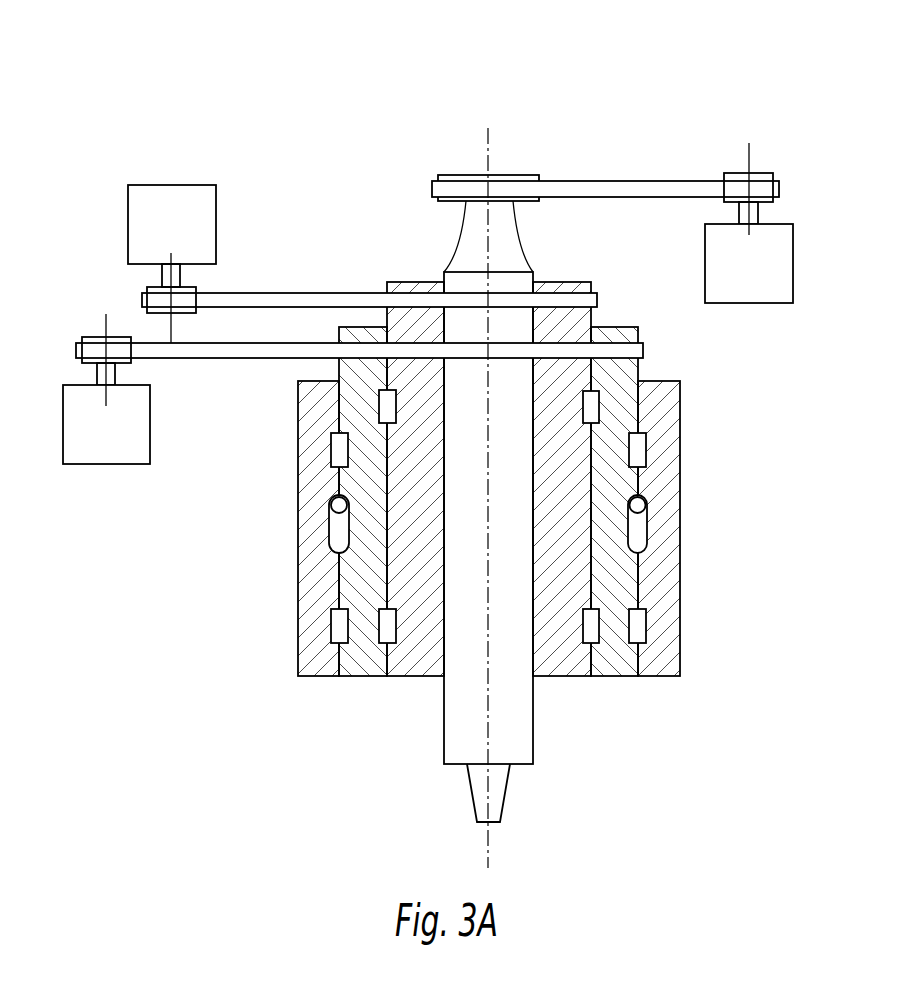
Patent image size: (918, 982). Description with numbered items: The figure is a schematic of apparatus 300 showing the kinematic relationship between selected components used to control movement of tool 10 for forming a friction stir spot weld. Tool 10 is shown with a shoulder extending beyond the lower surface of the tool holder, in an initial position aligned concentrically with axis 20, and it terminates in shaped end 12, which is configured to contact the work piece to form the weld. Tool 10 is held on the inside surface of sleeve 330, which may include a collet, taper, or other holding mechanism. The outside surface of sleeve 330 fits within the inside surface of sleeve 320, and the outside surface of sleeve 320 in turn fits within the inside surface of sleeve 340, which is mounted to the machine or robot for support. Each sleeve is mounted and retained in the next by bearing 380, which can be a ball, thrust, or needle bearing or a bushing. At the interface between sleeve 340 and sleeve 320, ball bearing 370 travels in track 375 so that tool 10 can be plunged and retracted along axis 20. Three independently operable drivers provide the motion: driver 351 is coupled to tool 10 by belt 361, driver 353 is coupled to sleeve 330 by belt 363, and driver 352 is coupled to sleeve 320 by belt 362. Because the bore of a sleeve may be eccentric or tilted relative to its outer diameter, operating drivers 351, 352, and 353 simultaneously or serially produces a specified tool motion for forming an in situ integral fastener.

The apparatus 300 is at (737, 48).
The axis 20 is at (492, 145).
The tool 10 is at (455, 766).
The shaped end 12 is at (503, 817).
The sleeve 330 is at (562, 677).
The sleeve 320 is at (612, 677).
The sleeve 340 is at (665, 677).
The bearing 380 is at (383, 417).
The track 375 is at (643, 544).
The ball bearing 370 is at (645, 503).
The belt 361 is at (606, 181).
The belt 362 is at (238, 360).
The belt 363 is at (291, 292).
The driver 351 is at (795, 238).
The driver 352 is at (62, 397).
The driver 353 is at (126, 197).